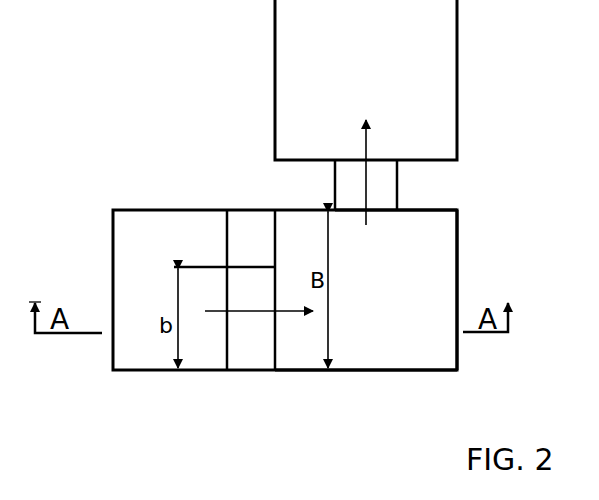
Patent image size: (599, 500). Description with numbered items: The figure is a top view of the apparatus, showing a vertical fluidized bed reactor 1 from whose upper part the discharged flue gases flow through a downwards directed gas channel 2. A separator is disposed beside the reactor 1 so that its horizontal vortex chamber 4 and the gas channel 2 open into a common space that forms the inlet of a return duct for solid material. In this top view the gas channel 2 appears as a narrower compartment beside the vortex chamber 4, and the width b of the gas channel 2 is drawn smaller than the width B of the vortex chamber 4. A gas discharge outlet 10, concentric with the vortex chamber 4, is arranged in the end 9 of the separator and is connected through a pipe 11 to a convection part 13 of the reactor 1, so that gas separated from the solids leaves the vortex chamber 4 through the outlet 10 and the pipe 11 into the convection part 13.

The vertical fluidized bed reactor 1 is at (135, 264).
The gas channel 2 is at (240, 355).
The vortex chamber 4 is at (390, 355).
The end of the separator 9 is at (436, 211).
The gas discharge outlet 10 is at (387, 212).
The pipe 11 is at (334, 183).
The convection part 13 is at (423, 79).